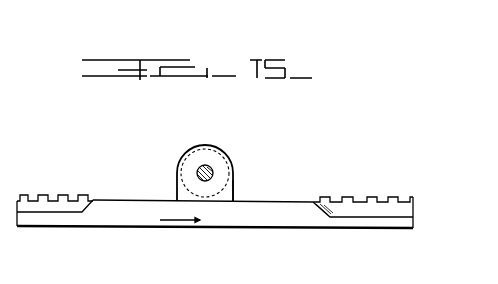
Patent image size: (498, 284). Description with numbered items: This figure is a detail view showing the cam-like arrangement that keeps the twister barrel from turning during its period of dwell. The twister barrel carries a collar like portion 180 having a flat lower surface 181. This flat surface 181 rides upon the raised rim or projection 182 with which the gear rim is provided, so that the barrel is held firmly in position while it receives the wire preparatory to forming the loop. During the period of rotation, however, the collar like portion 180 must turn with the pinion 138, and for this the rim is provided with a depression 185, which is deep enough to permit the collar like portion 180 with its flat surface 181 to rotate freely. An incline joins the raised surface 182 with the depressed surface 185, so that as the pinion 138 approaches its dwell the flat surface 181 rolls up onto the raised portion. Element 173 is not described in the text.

The rail bar 173 is at (378, 222).
The depression 185 is at (48, 212).
The raised rim or projection 182 is at (283, 203).
The collar like portion 180 is at (220, 148).
The flat lower surface 181 is at (233, 195).
The pinion 138 is at (177, 163).